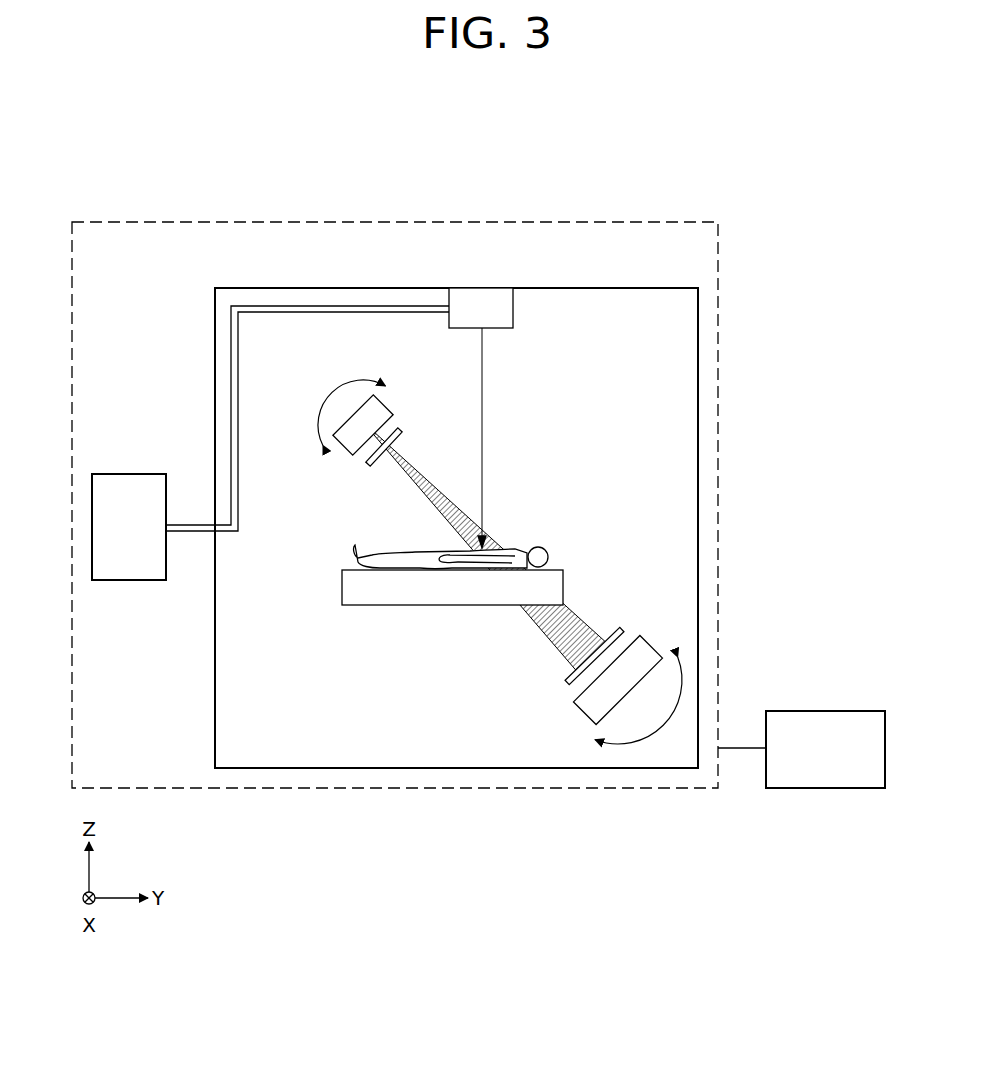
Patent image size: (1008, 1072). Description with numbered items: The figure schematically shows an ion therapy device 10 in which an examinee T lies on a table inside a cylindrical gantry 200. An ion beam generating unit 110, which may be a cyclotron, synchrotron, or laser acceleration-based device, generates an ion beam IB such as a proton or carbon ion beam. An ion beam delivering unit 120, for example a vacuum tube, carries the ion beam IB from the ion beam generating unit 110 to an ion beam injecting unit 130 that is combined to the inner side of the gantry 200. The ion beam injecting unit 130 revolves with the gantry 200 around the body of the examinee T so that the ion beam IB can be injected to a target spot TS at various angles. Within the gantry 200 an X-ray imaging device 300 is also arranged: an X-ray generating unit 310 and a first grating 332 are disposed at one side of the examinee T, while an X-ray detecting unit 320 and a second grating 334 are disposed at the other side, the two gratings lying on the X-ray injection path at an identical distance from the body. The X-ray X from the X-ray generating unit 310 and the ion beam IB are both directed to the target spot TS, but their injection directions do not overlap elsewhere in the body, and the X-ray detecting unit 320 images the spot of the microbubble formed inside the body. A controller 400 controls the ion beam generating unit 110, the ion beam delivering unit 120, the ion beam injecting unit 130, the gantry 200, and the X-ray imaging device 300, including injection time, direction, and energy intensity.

The ion therapy device 10 is at (805, 167).
The gantry 200 is at (650, 288).
The ion beam generating unit 110 is at (128, 490).
The ion beam delivering unit 120 is at (188, 523).
The ion beam injecting unit 130 is at (503, 307).
The ion beam IB is at (483, 388).
The X-ray imaging device 300 is at (471, 550).
The X-ray generating unit 310 is at (345, 443).
The X-ray detecting unit 320 is at (590, 710).
The first grating 332 is at (368, 465).
The second grating 334 is at (567, 682).
The X-ray X is at (583, 620).
The examinee T is at (532, 528).
The target spot TS is at (492, 543).
The controller 400 is at (835, 711).